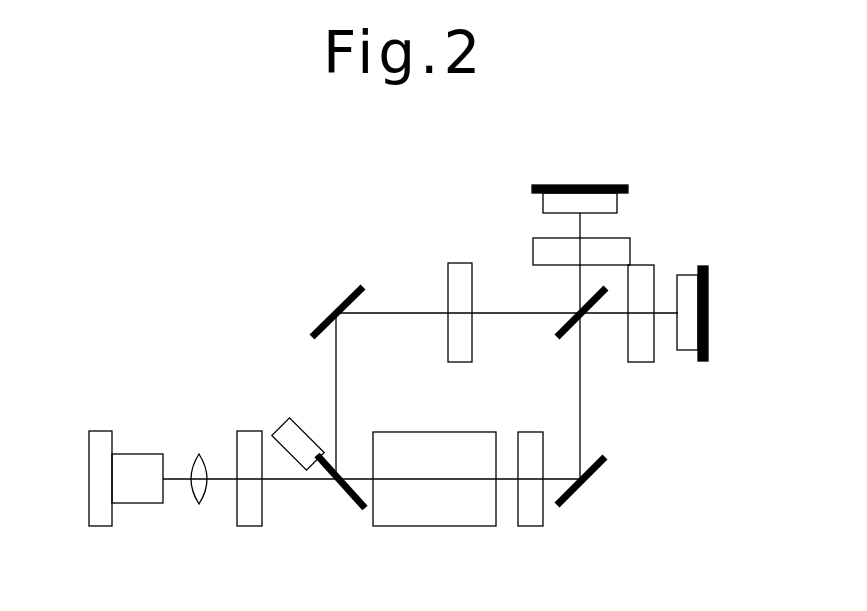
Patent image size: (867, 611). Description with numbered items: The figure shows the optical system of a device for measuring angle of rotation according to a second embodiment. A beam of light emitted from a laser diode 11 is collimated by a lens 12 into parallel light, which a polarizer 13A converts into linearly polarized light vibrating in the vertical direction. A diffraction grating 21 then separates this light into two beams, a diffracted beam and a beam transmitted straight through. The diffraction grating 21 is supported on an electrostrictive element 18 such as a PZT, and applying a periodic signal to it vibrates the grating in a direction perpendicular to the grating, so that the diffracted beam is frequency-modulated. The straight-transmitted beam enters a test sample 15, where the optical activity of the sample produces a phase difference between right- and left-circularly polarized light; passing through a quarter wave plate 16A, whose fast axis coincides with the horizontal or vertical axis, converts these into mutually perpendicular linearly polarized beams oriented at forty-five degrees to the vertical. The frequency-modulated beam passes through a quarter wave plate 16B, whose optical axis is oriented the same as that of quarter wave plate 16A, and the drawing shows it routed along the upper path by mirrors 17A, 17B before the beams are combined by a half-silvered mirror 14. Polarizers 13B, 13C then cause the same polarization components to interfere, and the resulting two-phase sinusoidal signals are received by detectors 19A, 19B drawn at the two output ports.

The laser diode 11 is at (100, 527).
The lens 12 is at (199, 504).
The polarizer 13A is at (250, 527).
The polarizer 13B is at (630, 243).
The polarizer 13C is at (655, 270).
The half-silvered mirror 14 is at (570, 327).
The test sample 15 is at (445, 527).
The quarter wave plate 16A is at (533, 528).
The quarter wave plate 16B is at (463, 263).
The mirror 17A is at (330, 312).
The mirror 17B is at (598, 478).
The electrostrictive element 18 is at (280, 420).
The photodetector 19A is at (577, 185).
The photodetector 19B is at (708, 330).
The diffraction grating 21 is at (347, 503).